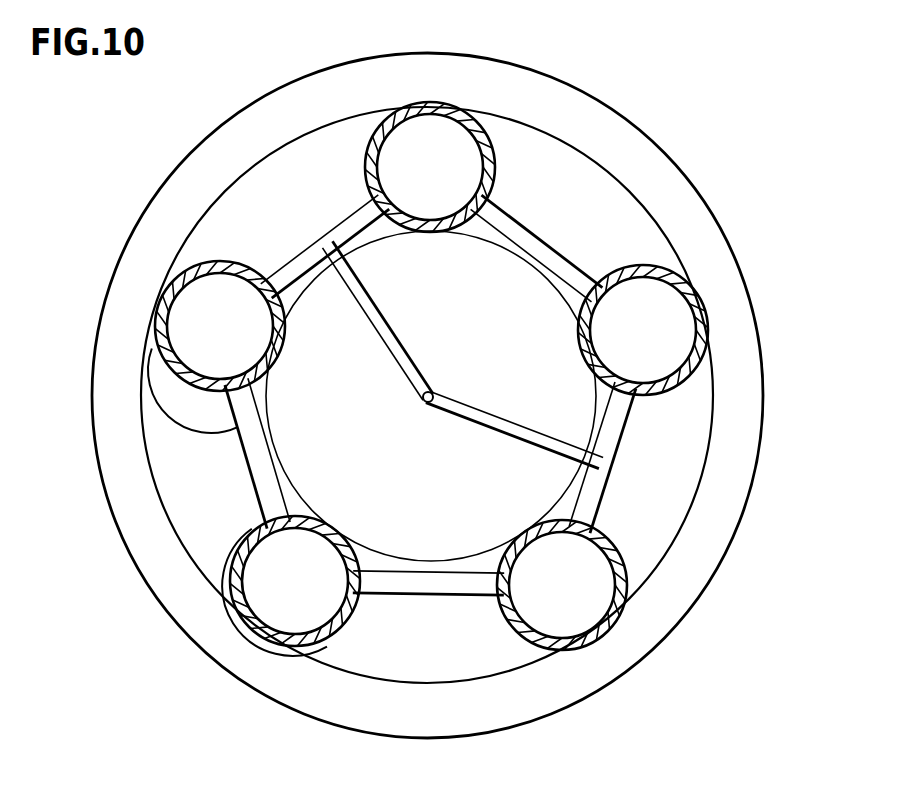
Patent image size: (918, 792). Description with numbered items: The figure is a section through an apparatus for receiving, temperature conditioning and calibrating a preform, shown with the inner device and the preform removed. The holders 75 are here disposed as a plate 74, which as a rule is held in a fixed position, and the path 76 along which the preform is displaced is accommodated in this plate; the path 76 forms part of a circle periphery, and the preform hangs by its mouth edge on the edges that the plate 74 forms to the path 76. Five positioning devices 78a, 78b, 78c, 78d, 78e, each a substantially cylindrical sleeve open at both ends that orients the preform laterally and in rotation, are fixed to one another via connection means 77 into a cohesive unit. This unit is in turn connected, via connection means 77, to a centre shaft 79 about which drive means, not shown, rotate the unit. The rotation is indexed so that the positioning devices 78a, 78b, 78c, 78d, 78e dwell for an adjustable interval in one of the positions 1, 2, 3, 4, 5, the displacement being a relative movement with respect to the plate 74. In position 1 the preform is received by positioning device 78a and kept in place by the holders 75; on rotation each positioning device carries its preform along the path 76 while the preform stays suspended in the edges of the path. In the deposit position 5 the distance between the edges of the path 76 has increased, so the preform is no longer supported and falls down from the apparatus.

The plate 74 is at (578, 110).
The holders 75 is at (688, 206).
The path 76 is at (282, 180).
The connection means 77 is at (302, 257).
The positioning device 78a is at (234, 347).
The positioning device 78b is at (447, 167).
The positioning device 78c is at (621, 360).
The positioning device 78d is at (535, 575).
The positioning device 78e is at (286, 578).
The centre shaft 79 is at (434, 392).
The position 1 is at (156, 328).
The position 2 is at (368, 154).
The position 3 is at (578, 342).
The position 4 is at (523, 532).
The position 5 is at (345, 620).